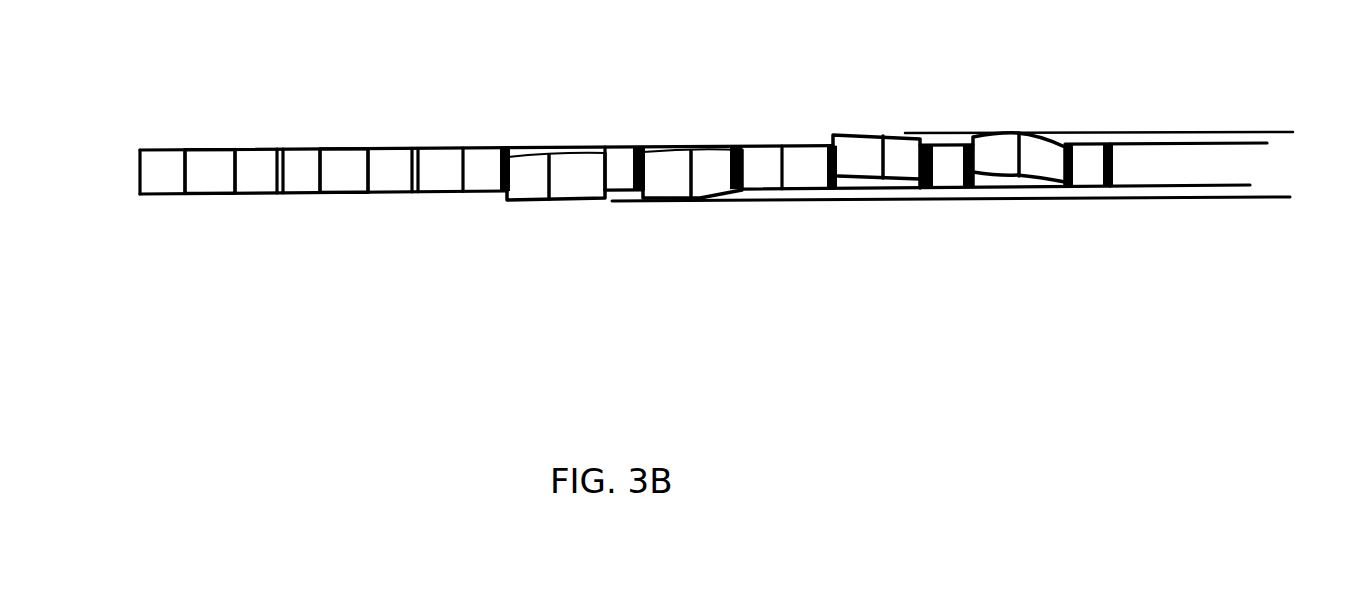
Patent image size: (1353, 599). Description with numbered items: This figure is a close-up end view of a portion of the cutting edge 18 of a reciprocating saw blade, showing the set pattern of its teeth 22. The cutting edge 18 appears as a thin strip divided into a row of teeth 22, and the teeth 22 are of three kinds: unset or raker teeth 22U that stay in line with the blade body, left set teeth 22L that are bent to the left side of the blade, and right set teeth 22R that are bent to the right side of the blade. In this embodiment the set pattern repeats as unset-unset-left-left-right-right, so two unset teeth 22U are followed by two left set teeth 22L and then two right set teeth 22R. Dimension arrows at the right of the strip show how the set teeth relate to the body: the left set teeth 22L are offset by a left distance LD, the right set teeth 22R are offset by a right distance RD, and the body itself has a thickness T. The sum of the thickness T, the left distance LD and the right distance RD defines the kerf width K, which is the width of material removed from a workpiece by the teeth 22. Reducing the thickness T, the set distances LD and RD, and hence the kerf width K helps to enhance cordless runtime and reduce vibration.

The teeth 22 is at (565, 127).
The unset teeth 22U is at (213, 170).
The right set teeth 22R is at (530, 192).
The left set teeth 22L is at (860, 147).
The cutting edge 18 is at (820, 240).
The left distance LD is at (1137, 175).
The right distance RD is at (1172, 158).
The thickness T is at (1223, 144).
The kerf width K is at (1287, 133).